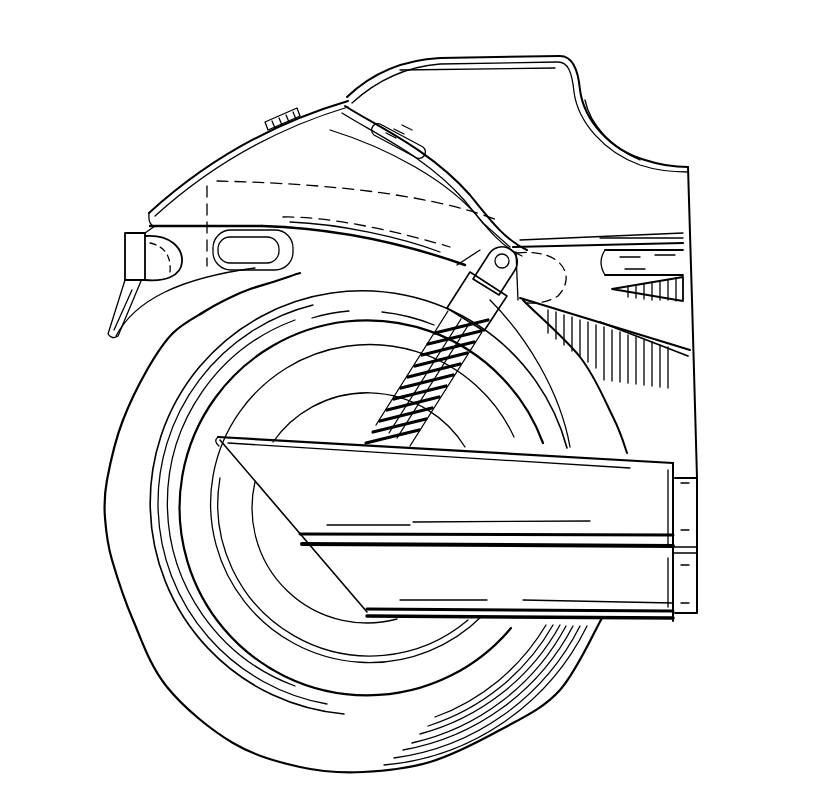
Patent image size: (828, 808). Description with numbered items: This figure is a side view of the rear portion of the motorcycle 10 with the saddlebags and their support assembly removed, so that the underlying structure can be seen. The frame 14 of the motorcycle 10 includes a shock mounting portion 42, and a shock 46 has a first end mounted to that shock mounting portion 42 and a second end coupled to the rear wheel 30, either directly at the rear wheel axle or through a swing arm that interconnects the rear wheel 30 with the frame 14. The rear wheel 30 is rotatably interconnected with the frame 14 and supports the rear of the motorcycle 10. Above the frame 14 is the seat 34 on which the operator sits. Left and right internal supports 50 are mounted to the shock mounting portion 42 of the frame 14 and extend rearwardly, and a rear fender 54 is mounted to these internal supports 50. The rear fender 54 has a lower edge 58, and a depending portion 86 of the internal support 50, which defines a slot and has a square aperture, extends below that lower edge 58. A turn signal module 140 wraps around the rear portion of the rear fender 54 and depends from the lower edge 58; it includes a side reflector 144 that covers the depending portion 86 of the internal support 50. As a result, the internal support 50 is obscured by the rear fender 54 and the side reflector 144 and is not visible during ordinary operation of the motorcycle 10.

The motorcycle 10 is at (720, 163).
The frame 14 is at (650, 262).
The rear wheel 30 is at (181, 661).
The seat 34 is at (558, 82).
The shock mounting portion 42 is at (583, 258).
The shock 46 is at (380, 374).
The internal supports 50 is at (207, 187).
The rear fender 54 is at (250, 140).
The lower edge 58 is at (127, 233).
The depending portion 86 is at (312, 238).
The turn signal module 140 is at (103, 303).
The side reflector 144 is at (260, 257).